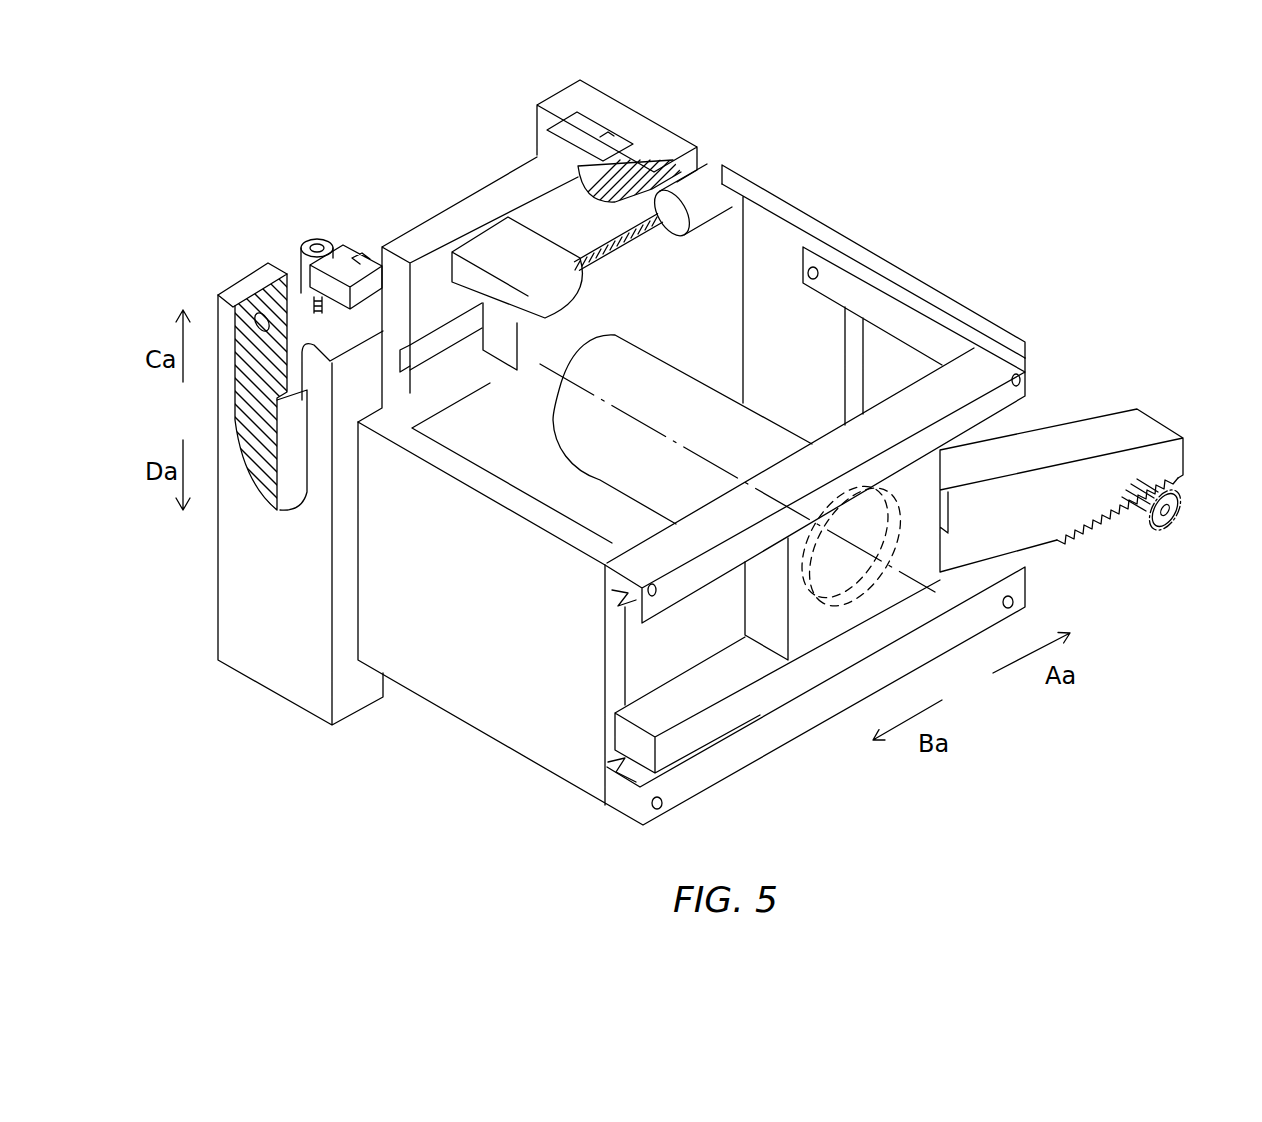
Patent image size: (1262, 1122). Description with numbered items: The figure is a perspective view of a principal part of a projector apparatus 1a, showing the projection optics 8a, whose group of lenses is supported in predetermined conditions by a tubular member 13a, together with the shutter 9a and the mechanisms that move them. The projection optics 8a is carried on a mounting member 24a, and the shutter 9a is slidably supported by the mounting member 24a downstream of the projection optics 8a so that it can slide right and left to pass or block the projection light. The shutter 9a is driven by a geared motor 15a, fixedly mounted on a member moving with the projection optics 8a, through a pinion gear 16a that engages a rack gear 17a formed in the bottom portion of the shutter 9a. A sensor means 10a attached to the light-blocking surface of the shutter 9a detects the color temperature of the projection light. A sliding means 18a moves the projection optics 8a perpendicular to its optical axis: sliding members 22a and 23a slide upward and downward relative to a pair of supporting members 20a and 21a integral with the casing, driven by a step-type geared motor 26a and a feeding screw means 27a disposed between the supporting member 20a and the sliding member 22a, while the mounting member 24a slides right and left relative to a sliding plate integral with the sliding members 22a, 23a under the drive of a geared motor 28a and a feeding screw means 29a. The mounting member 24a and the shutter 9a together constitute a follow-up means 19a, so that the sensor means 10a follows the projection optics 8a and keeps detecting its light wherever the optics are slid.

The projector apparatus 1a is at (895, 175).
The projection optics 8a is at (712, 445).
The shutter 9a is at (767, 687).
The sensor means 10a is at (880, 548).
The tubular member 13a is at (687, 336).
The geared motor 15a is at (1045, 412).
The pinion gear 16a is at (1170, 518).
The rack gear 17a is at (1095, 522).
The sliding means 18a is at (756, 144).
The follow-up means 19a is at (865, 220).
The supporting member 20a is at (305, 590).
The supporting member 21a is at (620, 120).
The sliding member 22a is at (350, 258).
The sliding member 23a is at (567, 102).
The mounting member 24a is at (520, 442).
The step-type geared motor 26a is at (288, 475).
The feeding screw means 27a is at (300, 263).
The geared motor 28a is at (540, 262).
The feeding screw means 29a is at (697, 208).